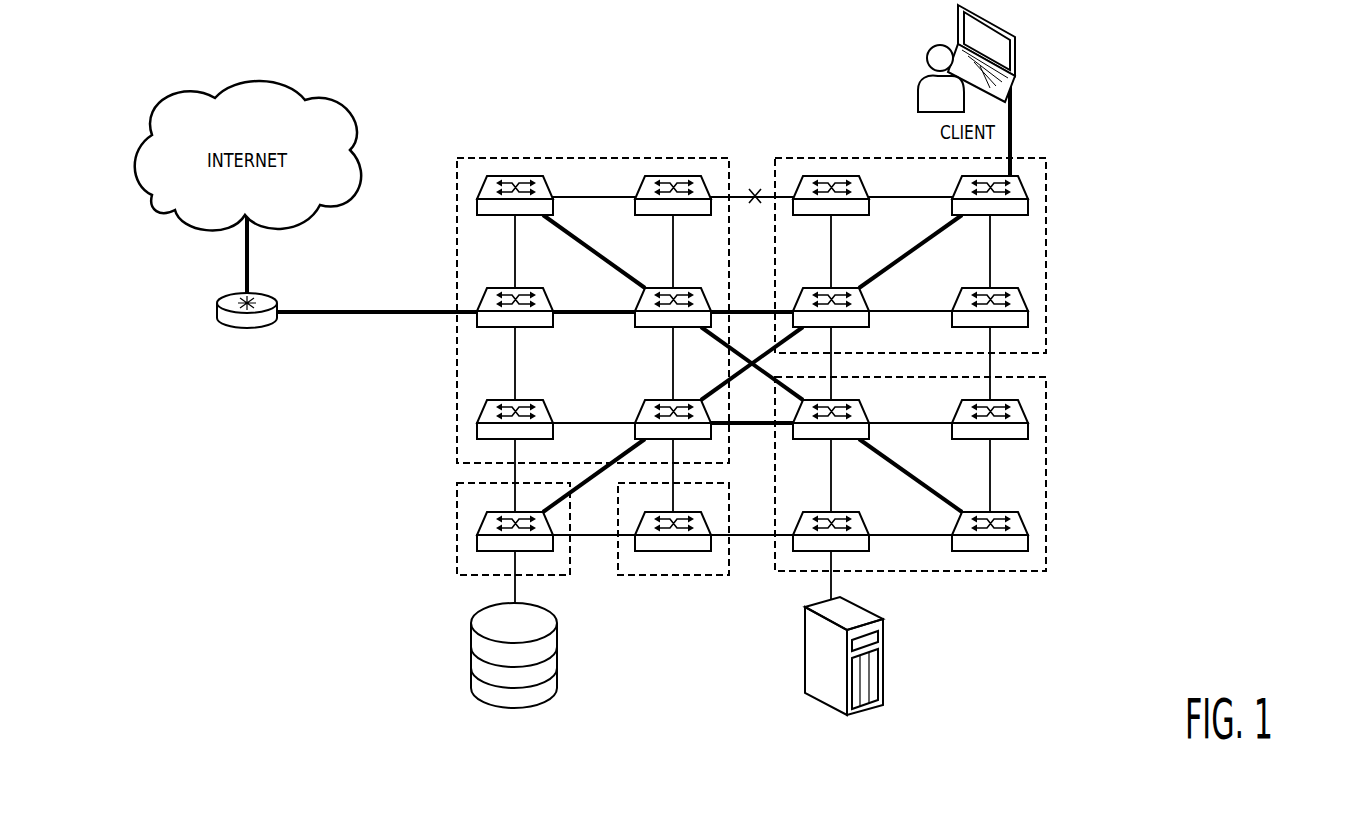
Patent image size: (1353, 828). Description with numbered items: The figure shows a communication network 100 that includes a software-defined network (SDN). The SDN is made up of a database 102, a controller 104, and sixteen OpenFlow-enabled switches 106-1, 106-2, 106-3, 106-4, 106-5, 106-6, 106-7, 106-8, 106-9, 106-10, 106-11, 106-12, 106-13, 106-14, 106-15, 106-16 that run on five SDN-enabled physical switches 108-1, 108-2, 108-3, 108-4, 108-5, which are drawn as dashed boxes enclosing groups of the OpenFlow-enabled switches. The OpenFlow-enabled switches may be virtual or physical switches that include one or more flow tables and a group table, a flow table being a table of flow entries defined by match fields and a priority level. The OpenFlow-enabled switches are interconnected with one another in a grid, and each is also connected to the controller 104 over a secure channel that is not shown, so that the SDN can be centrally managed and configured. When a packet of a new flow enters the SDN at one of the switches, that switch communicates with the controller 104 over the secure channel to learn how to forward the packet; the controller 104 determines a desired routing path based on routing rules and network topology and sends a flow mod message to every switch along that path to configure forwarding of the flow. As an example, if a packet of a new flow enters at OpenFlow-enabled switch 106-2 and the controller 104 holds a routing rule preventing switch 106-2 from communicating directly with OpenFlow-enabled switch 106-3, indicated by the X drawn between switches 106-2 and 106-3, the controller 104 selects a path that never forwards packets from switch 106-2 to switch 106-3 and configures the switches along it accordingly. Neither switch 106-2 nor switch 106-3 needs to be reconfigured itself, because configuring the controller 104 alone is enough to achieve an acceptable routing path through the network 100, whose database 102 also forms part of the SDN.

The communication network 100 is at (1217, 62).
The database 102 is at (557, 655).
The controller 104 is at (805, 660).
The OpenFlow-enabled switch 106-1 is at (541, 176).
The OpenFlow-enabled switch 106-2 is at (670, 176).
The OpenFlow-enabled switch 106-3 is at (806, 176).
The OpenFlow-enabled switch 106-4 is at (1027, 186).
The OpenFlow-enabled switch 106-5 is at (477, 298).
The OpenFlow-enabled switch 106-6 is at (660, 288).
The OpenFlow-enabled switch 106-7 is at (863, 301).
The OpenFlow-enabled switch 106-8 is at (1027, 300).
The OpenFlow-enabled switch 106-9 is at (480, 408).
The OpenFlow-enabled switch 106-10 is at (645, 403).
The OpenFlow-enabled switch 106-11 is at (866, 431).
The OpenFlow-enabled switch 106-12 is at (1027, 416).
The OpenFlow-enabled switch 106-13 is at (480, 518).
The OpenFlow-enabled switch 106-14 is at (660, 552).
The OpenFlow-enabled switch 106-15 is at (855, 552).
The OpenFlow-enabled switch 106-16 is at (1027, 518).
The SDN-enabled physical switch 108-1 is at (457, 175).
The SDN-enabled physical switch 108-2 is at (1050, 159).
The SDN-enabled physical switch 108-3 is at (1047, 571).
The SDN-enabled physical switch 108-4 is at (705, 575).
The SDN-enabled physical switch 108-5 is at (457, 565).